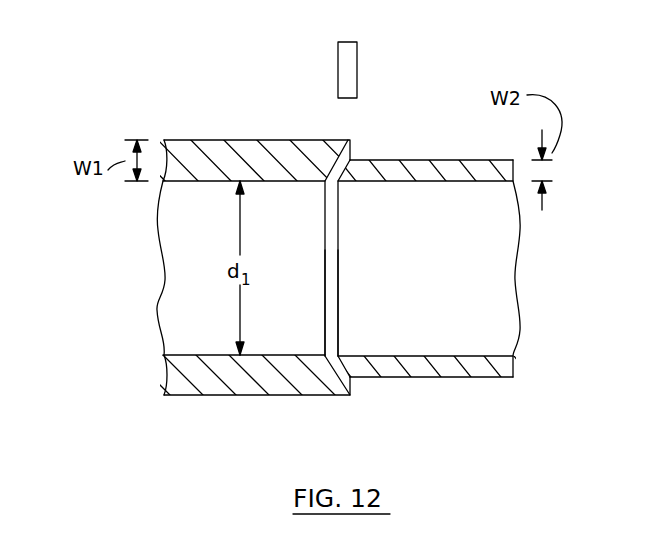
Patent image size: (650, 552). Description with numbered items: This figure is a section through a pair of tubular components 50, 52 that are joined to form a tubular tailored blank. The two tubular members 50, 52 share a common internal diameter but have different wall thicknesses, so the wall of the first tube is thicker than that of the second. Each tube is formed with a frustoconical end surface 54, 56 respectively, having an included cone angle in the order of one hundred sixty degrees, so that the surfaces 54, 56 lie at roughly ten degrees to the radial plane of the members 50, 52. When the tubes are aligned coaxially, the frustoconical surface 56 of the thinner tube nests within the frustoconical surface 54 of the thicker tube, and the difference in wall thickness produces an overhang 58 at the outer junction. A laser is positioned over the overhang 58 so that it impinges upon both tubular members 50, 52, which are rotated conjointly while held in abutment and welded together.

The tubular member 50 is at (183, 416).
The tubular member 52 is at (402, 394).
The frustoconical end surface 54 is at (328, 160).
The frustoconical end surface 56 is at (350, 162).
The overhang 58 is at (343, 140).